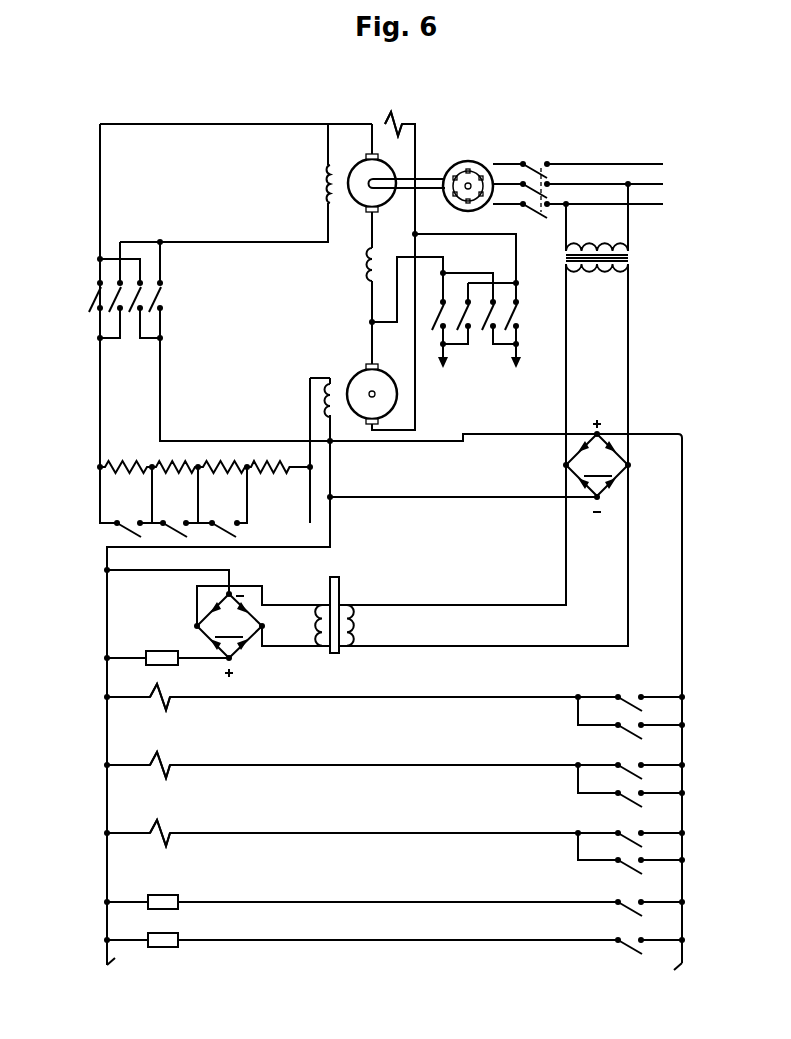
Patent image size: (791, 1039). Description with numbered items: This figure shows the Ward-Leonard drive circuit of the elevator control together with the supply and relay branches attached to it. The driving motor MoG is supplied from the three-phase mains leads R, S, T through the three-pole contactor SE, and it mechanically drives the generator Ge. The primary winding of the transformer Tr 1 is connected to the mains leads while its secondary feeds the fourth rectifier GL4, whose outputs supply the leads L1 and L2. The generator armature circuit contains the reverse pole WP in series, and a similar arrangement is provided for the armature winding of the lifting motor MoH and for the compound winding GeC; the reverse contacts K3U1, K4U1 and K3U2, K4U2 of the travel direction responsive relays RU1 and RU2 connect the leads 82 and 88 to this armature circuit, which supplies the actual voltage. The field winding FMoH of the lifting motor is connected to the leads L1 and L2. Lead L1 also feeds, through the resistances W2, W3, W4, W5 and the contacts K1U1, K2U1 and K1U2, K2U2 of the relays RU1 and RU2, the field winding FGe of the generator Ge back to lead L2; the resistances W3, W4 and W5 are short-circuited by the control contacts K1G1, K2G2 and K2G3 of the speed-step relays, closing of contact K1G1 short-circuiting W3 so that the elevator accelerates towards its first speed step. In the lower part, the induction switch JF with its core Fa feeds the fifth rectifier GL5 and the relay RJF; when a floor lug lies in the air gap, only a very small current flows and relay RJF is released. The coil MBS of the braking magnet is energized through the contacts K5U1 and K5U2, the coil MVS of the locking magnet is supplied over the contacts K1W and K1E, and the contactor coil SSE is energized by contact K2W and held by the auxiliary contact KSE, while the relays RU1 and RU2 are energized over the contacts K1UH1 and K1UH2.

The second lead 82 is at (441, 352).
The eighth lead 88 is at (518, 352).
The reverse pole WP is at (391, 120).
The generator Ge is at (359, 170).
The field winding of generator FGe is at (322, 187).
The driving motor MoG is at (468, 177).
The three-pole contactor SE is at (536, 178).
The mains lead R is at (651, 154).
The mains lead S is at (651, 174).
The mains lead T is at (651, 195).
The transformer Tr 1 is at (597, 247).
The compound winding GeC is at (352, 264).
The contact of relay RU2 K1U2 is at (97, 301).
The contact of relay RU1 K1U1 is at (115, 305).
The contact of relay RU1 K2U1 is at (141, 292).
The contact of relay RU2 K2U2 is at (152, 302).
The reverse contact of relay RU1 K4U1 is at (494, 313).
The reverse contact of relay RU2 K3U2 is at (508, 318).
The reverse contact of relay RU2 K4U2 is at (445, 343).
The reverse contact of relay RU1 K3U1 is at (468, 330).
The lifting motor MoH is at (359, 377).
The field winding of lifting motor FMoH is at (318, 407).
The resistance W5 is at (126, 459).
The resistance W4 is at (175, 459).
The resistance W3 is at (224, 459).
The resistance W2 is at (279, 459).
The control contact of relay RG3 K2G3 is at (130, 519).
The control contact of relay RG2 K2G2 is at (176, 519).
The control contact of relay RG1 K1G1 is at (225, 519).
The lead L1 is at (97, 968).
The lead L2 is at (682, 963).
The fourth rectifier GL4 is at (597, 466).
The fifth rectifier GL5 is at (229, 635).
The core of induction switch Fa is at (337, 582).
The induction switch JF is at (347, 623).
The relay RJF is at (119, 659).
The coil of braking magnet MBS is at (115, 697).
The coil of locking magnet MVS is at (115, 765).
The contactor coil SSE is at (115, 833).
The travel direction responsive relay RU1 is at (119, 903).
The travel direction responsive relay RU2 is at (119, 941).
The contact of relay RU1 K5U1 is at (630, 697).
The contact of relay RU2 K5U2 is at (630, 725).
The contact of relay RE K1E is at (628, 765).
The contact of relay RW K1W is at (629, 793).
The auxiliary contact at contactor SE KSE is at (629, 833).
The contact of relay RW K2W is at (629, 860).
The contact of relay RUH1 K1UH1 is at (634, 902).
The contact of relay RUH2 K1UH2 is at (634, 940).